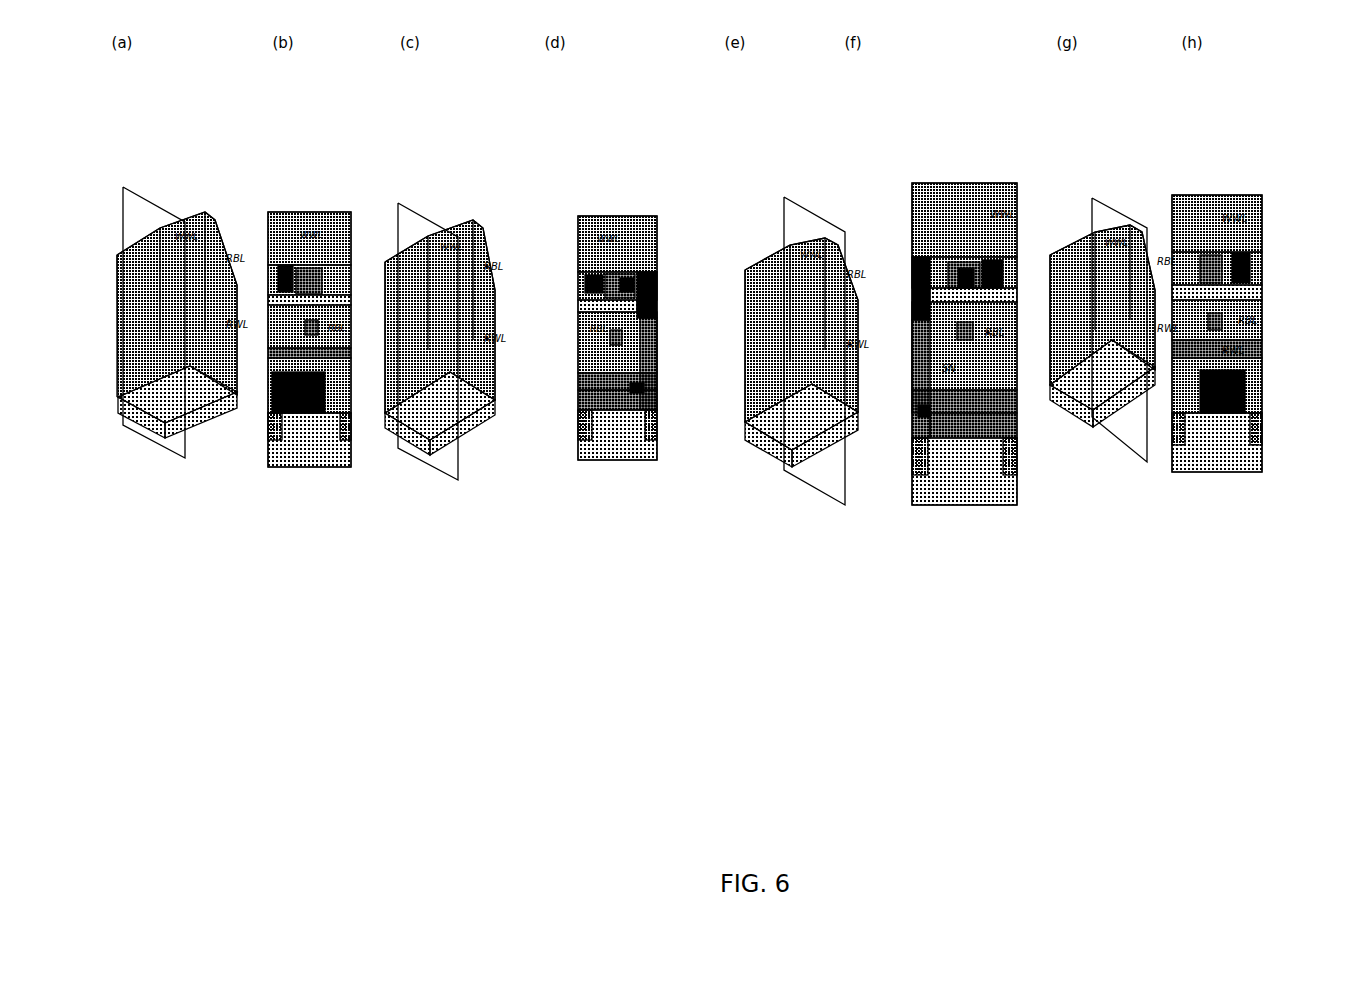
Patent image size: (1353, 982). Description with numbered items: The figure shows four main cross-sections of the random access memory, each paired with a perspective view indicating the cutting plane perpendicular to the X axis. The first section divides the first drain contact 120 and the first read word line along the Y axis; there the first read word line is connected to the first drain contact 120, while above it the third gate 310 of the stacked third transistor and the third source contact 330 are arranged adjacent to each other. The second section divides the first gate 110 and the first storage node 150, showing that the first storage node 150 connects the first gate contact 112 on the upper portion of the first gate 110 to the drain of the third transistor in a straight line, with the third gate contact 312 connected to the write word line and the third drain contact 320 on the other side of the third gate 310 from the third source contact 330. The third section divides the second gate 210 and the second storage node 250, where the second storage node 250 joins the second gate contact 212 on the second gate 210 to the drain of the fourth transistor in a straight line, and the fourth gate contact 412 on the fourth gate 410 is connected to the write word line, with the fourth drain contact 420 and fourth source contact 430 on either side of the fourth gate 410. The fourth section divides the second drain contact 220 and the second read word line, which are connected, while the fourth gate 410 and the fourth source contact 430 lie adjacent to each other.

The first gate 110 is at (603, 403).
The first gate contact 112 is at (642, 392).
The first drain contact 120 is at (303, 400).
The first storage node 150 is at (651, 362).
The second gate 210 is at (978, 430).
The second gate contact 212 is at (925, 416).
The second drain contact 220 is at (1225, 405).
The second storage node 250 is at (921, 366).
The third gate 310 is at (614, 282).
The third gate contact 312 is at (628, 280).
The third drain contact 320 is at (657, 292).
The third source contact 330 is at (596, 273).
The fourth gate 410 is at (1213, 266).
The fourth gate contact 412 is at (965, 268).
The fourth drain contact 420 is at (917, 264).
The fourth source contact 430 is at (1242, 256).